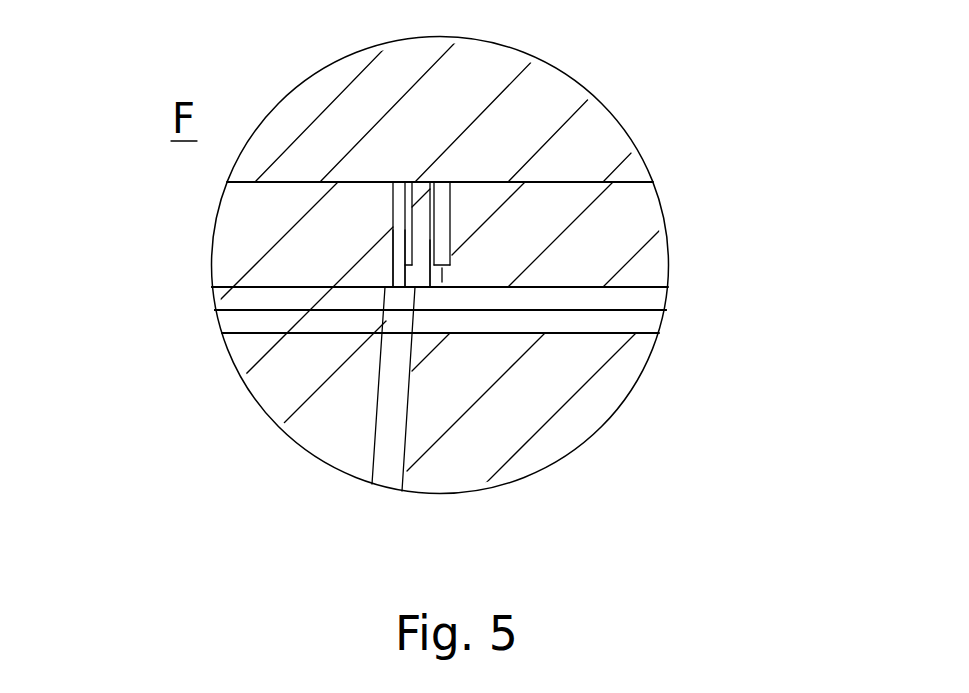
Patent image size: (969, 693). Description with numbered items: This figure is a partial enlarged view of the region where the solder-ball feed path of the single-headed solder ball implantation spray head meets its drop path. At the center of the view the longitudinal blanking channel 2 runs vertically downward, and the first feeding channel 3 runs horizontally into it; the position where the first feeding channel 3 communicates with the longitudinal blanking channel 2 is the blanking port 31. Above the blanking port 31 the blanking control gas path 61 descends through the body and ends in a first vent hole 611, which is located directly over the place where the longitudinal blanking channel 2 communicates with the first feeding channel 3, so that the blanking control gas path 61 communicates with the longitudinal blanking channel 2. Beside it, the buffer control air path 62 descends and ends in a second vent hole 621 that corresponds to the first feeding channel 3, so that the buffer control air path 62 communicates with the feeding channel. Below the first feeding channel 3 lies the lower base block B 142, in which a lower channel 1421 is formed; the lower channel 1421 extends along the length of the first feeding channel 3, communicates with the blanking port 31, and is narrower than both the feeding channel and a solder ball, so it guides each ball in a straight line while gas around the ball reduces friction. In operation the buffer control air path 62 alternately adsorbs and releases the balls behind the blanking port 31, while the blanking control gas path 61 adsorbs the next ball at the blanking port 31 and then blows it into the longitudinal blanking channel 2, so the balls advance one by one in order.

The blanking control gas path 61 is at (426, 182).
The first vent hole 611 is at (396, 274).
The buffer control air path 62 is at (443, 213).
The second vent hole 621 is at (433, 275).
The first feeding channel 3 is at (645, 297).
The blanking port 31 is at (388, 320).
The lower base block B 142 is at (634, 325).
The lower channel 1421 is at (521, 416).
The longitudinal blanking channel 2 is at (388, 444).